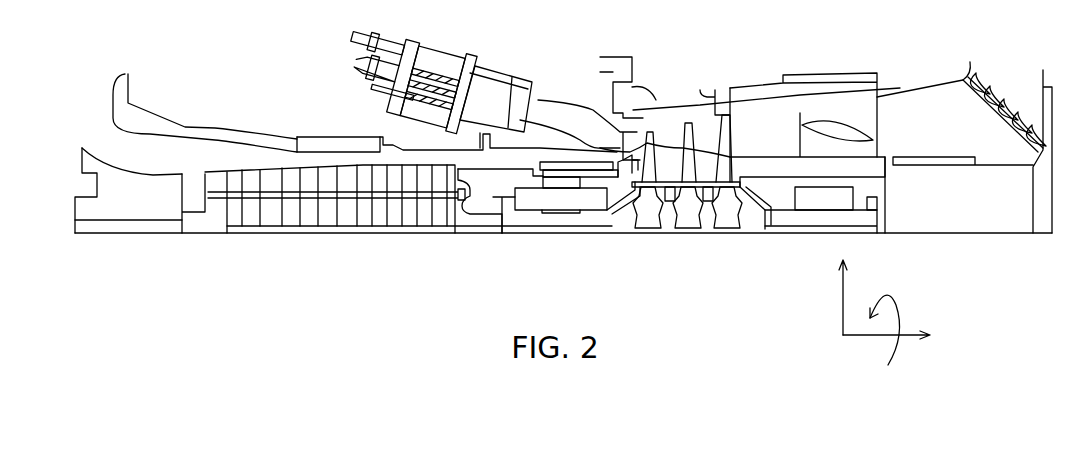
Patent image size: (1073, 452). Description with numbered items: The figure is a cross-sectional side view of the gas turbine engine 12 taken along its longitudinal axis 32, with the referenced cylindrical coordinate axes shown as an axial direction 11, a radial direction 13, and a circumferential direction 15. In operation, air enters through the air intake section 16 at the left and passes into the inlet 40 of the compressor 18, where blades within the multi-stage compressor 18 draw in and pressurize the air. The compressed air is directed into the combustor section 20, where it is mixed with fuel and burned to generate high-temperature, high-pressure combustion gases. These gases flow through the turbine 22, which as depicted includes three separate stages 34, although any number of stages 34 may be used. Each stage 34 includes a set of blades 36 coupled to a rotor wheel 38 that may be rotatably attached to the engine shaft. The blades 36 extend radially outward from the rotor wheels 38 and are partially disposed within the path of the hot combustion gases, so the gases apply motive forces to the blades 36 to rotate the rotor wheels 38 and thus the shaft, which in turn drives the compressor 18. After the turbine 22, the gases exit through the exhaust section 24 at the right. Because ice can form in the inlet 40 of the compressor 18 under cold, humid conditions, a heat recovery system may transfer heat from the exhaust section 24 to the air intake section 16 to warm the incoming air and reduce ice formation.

The axial direction 11 is at (856, 338).
The gas turbine engine 12 is at (494, 255).
The radial direction 13 is at (843, 300).
The circumferential direction 15 is at (890, 362).
The air intake section 16 is at (125, 155).
The compressor 18 is at (420, 128).
The combustor section 20 is at (590, 85).
The turbine 22 is at (713, 47).
The exhaust section 24 is at (717, 47).
The longitudinal axis 32 is at (942, 233).
The stage 34 is at (748, 270).
The blade 36 is at (688, 124).
The rotor wheel 38 is at (645, 225).
The inlet 40 is at (222, 162).